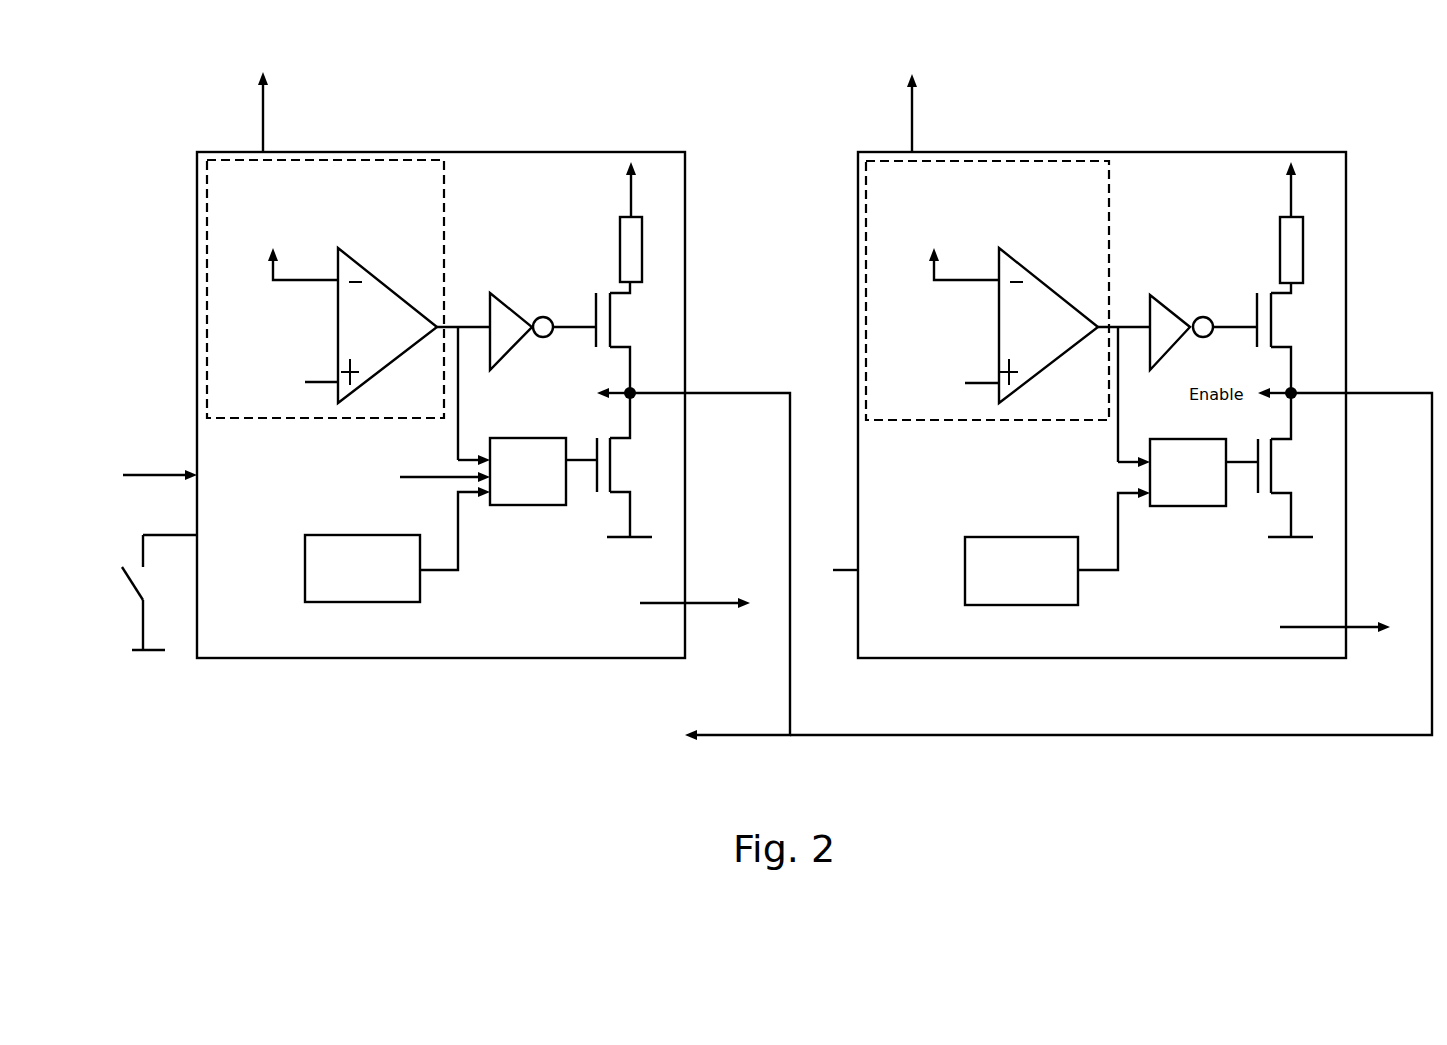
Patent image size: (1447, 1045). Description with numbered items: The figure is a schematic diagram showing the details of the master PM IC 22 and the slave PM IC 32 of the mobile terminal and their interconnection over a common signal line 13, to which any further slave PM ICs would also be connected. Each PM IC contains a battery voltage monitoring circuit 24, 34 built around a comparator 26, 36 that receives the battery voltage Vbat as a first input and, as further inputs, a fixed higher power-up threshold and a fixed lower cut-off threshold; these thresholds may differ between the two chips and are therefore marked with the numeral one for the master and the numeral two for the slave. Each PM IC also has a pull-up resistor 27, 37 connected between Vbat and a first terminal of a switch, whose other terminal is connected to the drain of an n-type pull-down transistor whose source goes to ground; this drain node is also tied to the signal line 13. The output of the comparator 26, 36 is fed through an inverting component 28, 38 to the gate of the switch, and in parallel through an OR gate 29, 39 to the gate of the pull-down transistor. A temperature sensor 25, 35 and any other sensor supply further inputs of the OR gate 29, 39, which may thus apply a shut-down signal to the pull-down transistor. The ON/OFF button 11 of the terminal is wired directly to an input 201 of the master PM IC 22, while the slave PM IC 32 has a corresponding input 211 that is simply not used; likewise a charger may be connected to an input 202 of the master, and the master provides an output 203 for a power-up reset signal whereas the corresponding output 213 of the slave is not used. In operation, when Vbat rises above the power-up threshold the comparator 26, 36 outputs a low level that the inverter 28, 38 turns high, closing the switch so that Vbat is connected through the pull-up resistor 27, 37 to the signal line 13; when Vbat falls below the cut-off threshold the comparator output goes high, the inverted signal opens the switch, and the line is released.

The ON/OFF button 11 is at (127, 597).
The signal line 13 is at (715, 392).
The master PM IC 22 is at (497, 152).
The battery voltage monitoring circuit 24 is at (341, 160).
The temperature sensor 25 is at (355, 602).
The comparator 26 is at (385, 280).
The pull-up resistor 27 is at (645, 243).
The inverting component 28 is at (507, 300).
The OR gate 29 is at (540, 505).
The slave PM IC 32 is at (1158, 152).
The battery voltage monitoring circuit 34 is at (1006, 161).
The temperature sensor 35 is at (1017, 605).
The comparator 36 is at (1043, 282).
The pull-up resistor 37 is at (1306, 243).
The inverting component 38 is at (1168, 300).
The OR gate 39 is at (1200, 506).
The input 201 is at (197, 533).
The input 202 is at (197, 462).
The output 203 is at (685, 610).
The input 211 is at (858, 565).
The output 213 is at (1345, 627).